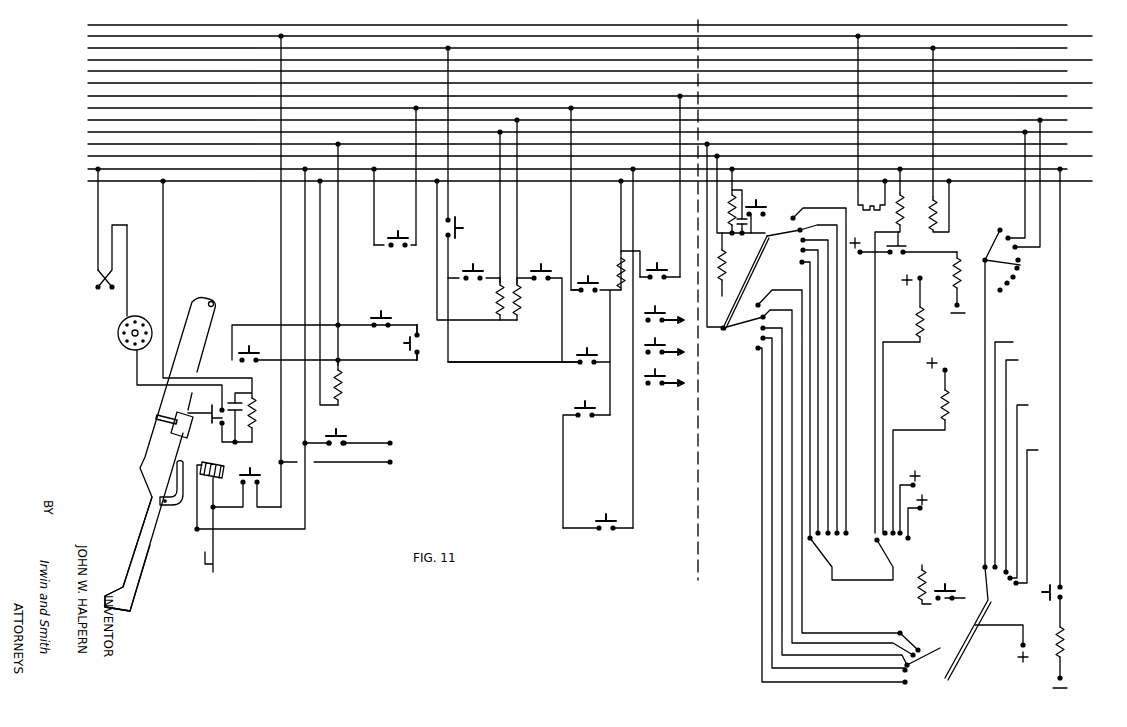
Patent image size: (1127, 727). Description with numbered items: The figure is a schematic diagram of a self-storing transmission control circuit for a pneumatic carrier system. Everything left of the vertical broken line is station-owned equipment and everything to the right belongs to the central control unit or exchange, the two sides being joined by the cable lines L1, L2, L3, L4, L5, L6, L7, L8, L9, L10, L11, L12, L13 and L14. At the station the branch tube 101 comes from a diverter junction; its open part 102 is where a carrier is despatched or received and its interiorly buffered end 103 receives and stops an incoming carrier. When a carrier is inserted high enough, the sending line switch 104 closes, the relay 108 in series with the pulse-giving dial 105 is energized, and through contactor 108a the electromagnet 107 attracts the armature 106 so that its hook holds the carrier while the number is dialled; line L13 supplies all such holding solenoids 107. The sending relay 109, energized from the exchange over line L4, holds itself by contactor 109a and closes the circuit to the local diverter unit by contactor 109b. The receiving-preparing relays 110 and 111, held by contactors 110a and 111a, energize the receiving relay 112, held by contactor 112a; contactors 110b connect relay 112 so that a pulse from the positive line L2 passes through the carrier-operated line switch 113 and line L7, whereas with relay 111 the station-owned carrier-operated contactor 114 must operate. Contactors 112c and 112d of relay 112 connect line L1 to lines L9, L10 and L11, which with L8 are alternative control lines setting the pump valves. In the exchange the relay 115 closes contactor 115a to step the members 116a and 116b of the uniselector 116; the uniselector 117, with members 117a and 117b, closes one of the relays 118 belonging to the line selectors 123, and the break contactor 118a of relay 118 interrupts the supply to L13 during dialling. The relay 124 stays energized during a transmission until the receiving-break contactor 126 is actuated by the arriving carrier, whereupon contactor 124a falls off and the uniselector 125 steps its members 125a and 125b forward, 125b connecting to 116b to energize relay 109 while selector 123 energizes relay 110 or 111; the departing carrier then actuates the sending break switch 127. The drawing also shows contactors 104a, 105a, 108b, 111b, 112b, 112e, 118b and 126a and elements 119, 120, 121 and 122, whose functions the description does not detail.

The station branch tube 101 is at (150, 456).
The open part of branch tube 102 is at (138, 545).
The interiorly buffered end 103 is at (132, 608).
The sending line switch 104 is at (172, 428).
The contact arm 104a is at (158, 414).
The pulse-giving disc 105 is at (120, 330).
The crossed contacts 105a is at (93, 258).
The armature 106 is at (170, 507).
The electromagnet 107 is at (210, 510).
The relay 108 is at (221, 311).
The contactor 108a is at (247, 476).
The relay contact 108b is at (324, 344).
The sending relay 109 is at (351, 382).
The holding contactor 109a is at (392, 315).
The contactor 109b is at (337, 442).
The receiving-preparing relay 110 is at (487, 299).
The holding contactor 110a is at (474, 265).
The contactors 110b is at (596, 338).
The receiving-preparing relay 111 is at (530, 299).
The holding contactor 111a is at (539, 305).
The relay contact 111b is at (586, 457).
The receiving relay 112 is at (618, 264).
The holding contactor 112a is at (529, 349).
The relay contact 112b is at (660, 259).
The contactor 112c is at (664, 308).
The contactor 112d is at (670, 338).
The relay contact 112e is at (664, 371).
The carrier-operated line switch 113 is at (395, 235).
The station-owned carrier-operated contactor 114 is at (598, 513).
The relay 115 is at (728, 215).
The contactor 115a is at (773, 214).
The uniselector 116 is at (743, 282).
The contact member 116a is at (803, 383).
The contact member 116b is at (754, 320).
The uniselector 117 is at (927, 578).
The contact member 117a is at (830, 538).
The contact member 117b is at (895, 536).
The relay 118 is at (902, 216).
The break contactor 118a is at (903, 251).
The relay contact 118b is at (800, 213).
The resistor 119 is at (915, 404).
The resistor 120 is at (921, 445).
The terminal 121 is at (923, 502).
The terminal 122 is at (930, 516).
The line selector unit 123 is at (1023, 405).
The relay 124 is at (940, 218).
The contactor 124a is at (1069, 591).
The uniselector 125 is at (1072, 642).
The contact member 125a is at (996, 572).
The selector contact 125b is at (949, 622).
The receiving-break contactor 126 is at (464, 224).
The contact 126a is at (975, 626).
The sending break switch 127 is at (425, 342).
The cable line L1 is at (604, 182).
The cable line L2 is at (586, 170).
The cable line L3 is at (598, 157).
The cable line L4 is at (586, 145).
The cable line L5 is at (598, 133).
The cable line L6 is at (586, 121).
The control line L7 is at (598, 109).
The control line L8 is at (586, 97).
The cable line L9 is at (598, 84).
The cable line L10 is at (590, 72).
The cable line L11 is at (602, 61).
The cable line L12 is at (590, 49).
The common control line L13 is at (602, 37).
The cable line L14 is at (590, 26).